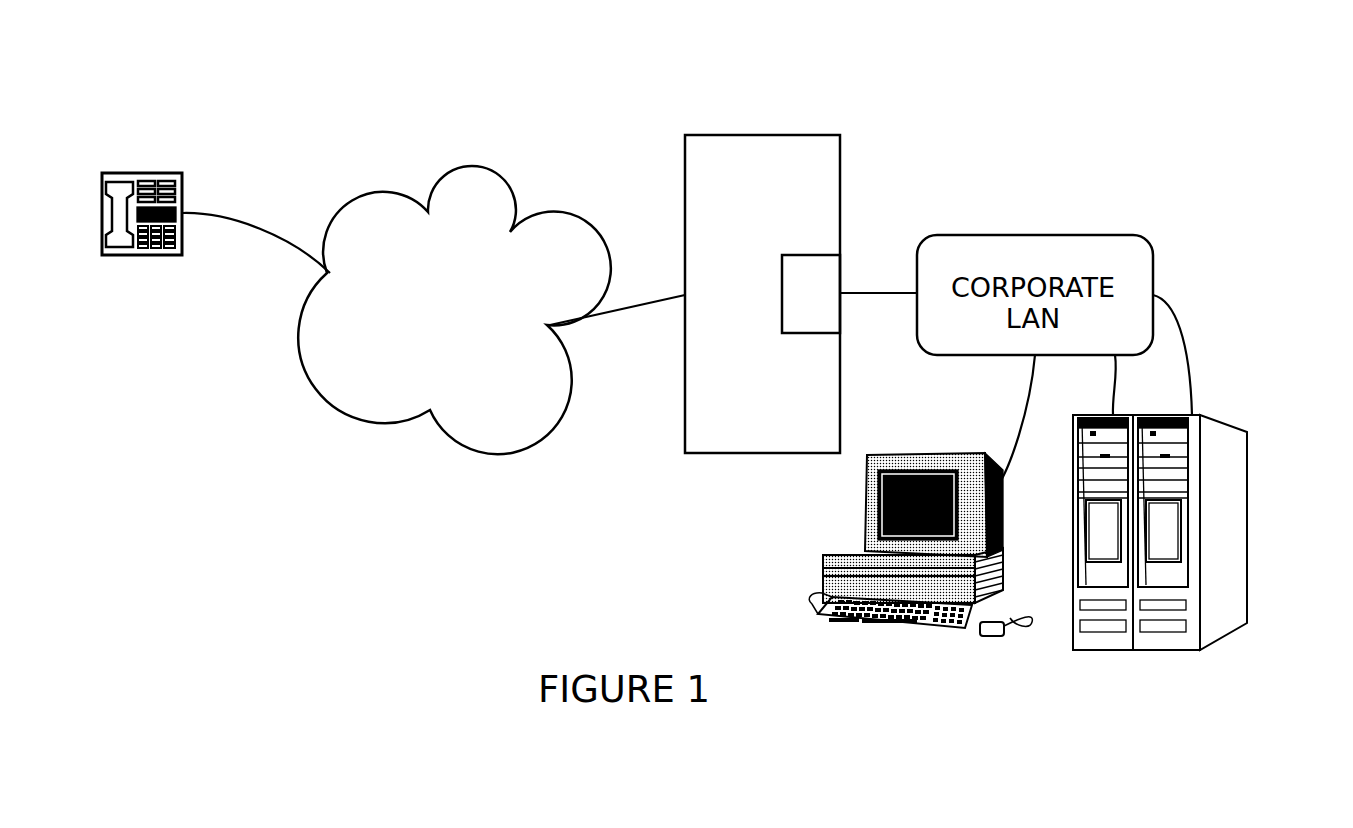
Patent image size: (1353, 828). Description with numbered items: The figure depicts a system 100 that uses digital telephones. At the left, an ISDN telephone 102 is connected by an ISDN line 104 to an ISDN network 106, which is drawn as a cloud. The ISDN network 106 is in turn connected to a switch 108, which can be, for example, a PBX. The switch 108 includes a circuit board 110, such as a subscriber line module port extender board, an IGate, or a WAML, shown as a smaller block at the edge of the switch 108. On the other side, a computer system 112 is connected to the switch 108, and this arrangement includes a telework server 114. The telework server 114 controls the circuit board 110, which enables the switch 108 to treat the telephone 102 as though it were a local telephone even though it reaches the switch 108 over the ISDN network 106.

The system 100 is at (1050, 155).
The ISDN telephone 102 is at (150, 175).
The ISDN line 104 is at (262, 230).
The ISDN network 106 is at (450, 303).
The switch 108 is at (784, 218).
The circuit board 110 is at (794, 306).
The computer system 112 is at (823, 568).
The telework server 114 is at (1230, 432).